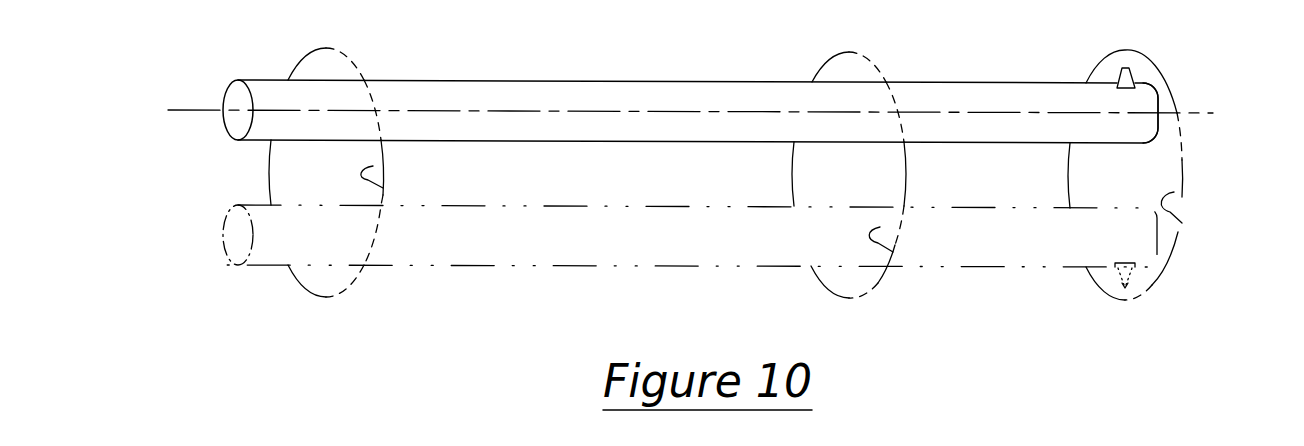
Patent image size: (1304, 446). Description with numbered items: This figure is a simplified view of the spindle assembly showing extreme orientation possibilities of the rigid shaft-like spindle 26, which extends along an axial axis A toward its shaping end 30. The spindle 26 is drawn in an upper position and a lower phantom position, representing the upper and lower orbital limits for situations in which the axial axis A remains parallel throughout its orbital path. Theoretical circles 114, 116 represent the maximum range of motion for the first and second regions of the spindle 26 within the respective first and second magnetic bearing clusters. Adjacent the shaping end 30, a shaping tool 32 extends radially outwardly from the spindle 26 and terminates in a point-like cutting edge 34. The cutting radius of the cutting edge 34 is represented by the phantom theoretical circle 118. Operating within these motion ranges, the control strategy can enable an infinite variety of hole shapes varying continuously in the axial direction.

The axial axis A is at (180, 110).
The spindle 26 is at (675, 82).
The shaping end 30 is at (1155, 97).
The shaping tool 32 is at (1142, 59).
The cutting edge 34 is at (1130, 68).
The theoretical circle 114 is at (897, 224).
The theoretical circle 116 is at (390, 170).
The phantom theoretical circle 118 is at (1196, 187).